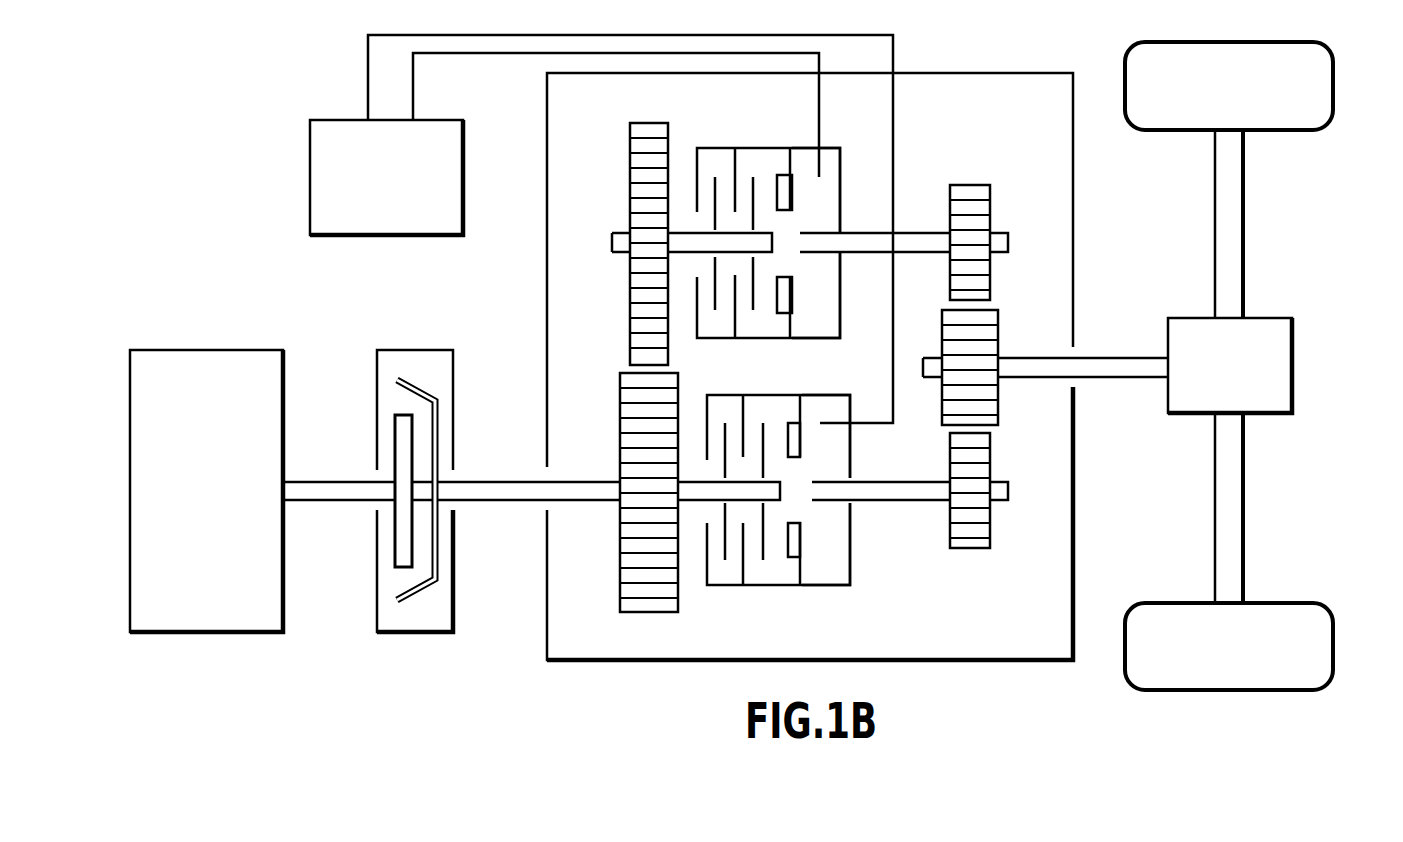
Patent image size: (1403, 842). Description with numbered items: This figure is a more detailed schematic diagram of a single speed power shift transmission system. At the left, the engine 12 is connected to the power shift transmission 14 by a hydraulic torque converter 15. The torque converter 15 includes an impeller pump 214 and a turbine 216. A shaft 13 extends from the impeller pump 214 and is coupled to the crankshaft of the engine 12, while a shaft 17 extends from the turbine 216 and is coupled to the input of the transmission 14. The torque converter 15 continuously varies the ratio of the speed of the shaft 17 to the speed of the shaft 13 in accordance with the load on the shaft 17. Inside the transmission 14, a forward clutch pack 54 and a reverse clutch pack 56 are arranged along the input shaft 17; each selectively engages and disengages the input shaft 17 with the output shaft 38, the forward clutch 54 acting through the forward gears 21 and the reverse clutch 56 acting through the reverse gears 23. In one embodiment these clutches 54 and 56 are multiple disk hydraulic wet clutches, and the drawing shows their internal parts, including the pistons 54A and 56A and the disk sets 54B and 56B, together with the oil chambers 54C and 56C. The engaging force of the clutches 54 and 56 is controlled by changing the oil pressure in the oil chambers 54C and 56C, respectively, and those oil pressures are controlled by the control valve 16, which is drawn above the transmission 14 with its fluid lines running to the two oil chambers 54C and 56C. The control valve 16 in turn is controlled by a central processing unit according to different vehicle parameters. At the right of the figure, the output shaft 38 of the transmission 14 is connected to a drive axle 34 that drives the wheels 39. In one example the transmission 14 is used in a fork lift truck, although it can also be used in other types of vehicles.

The engine 12 is at (210, 350).
The shaft 13 is at (332, 502).
The power shift transmission 14 is at (547, 612).
The hydraulic torque converter 15 is at (413, 458).
The control valve 16 is at (310, 182).
The shaft 17 is at (500, 502).
The forward gears 21 is at (630, 313).
The reverse gears 23 is at (970, 550).
The drive axle 34 is at (1293, 363).
The output shaft 38 is at (1123, 357).
The wheels 39 is at (1333, 82).
The forward clutch pack 54 is at (784, 237).
The clutch piston 54A is at (788, 167).
The clutch plates 54B is at (733, 167).
The oil chamber 54C is at (830, 160).
The reverse clutch pack 56 is at (803, 492).
The clutch piston 56A is at (797, 570).
The clutch plates 56B is at (742, 570).
The oil chamber 56C is at (835, 406).
The impeller pump 214 is at (395, 442).
The turbine 216 is at (437, 443).